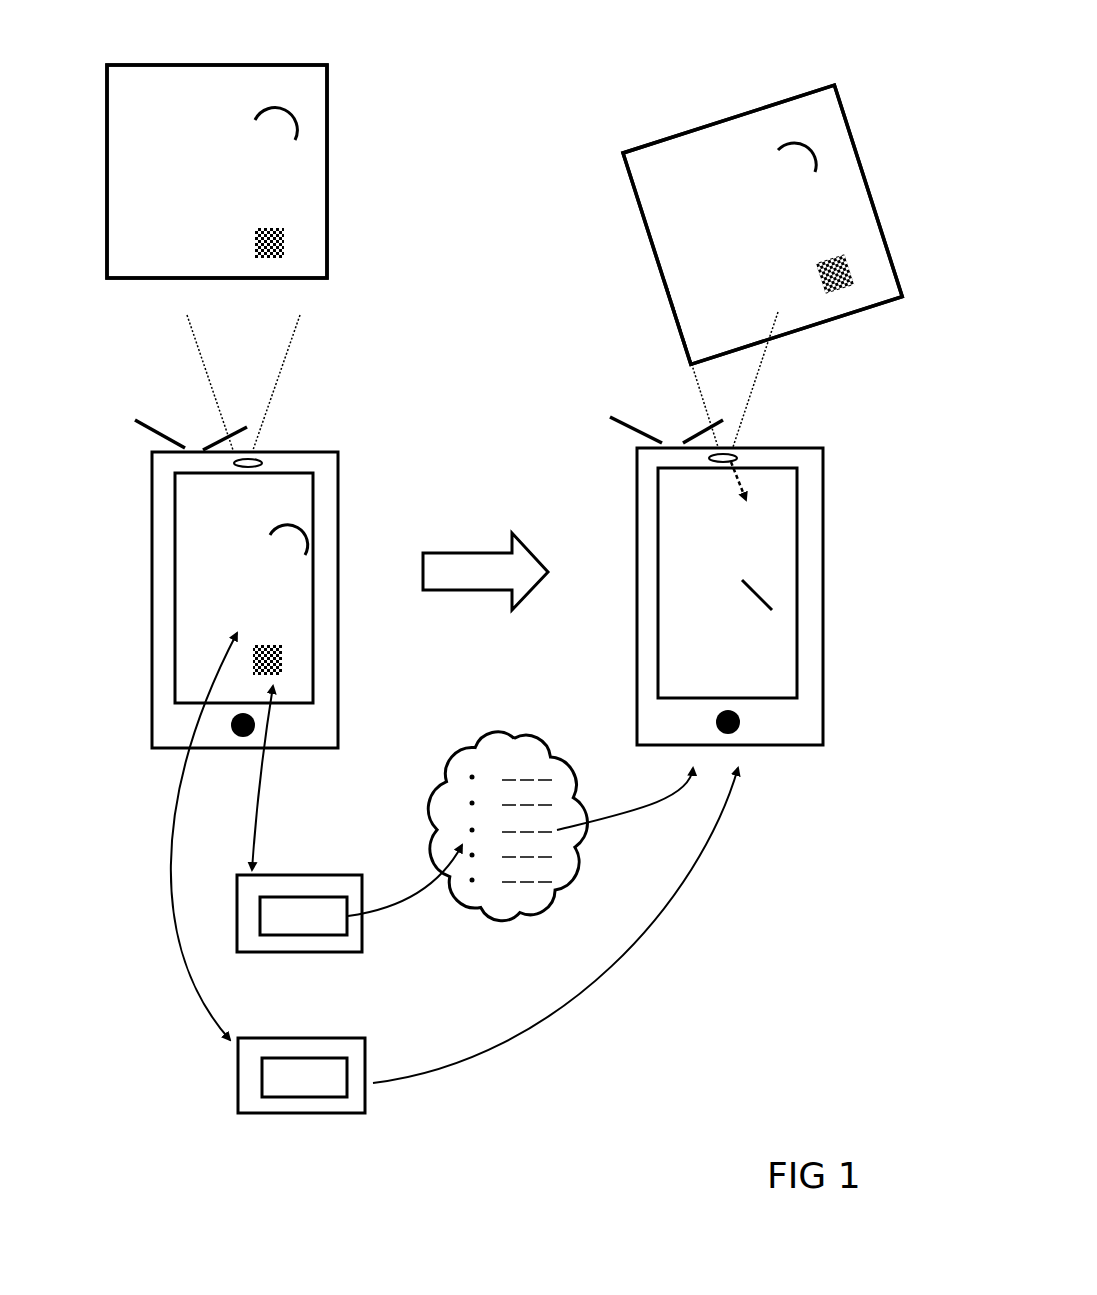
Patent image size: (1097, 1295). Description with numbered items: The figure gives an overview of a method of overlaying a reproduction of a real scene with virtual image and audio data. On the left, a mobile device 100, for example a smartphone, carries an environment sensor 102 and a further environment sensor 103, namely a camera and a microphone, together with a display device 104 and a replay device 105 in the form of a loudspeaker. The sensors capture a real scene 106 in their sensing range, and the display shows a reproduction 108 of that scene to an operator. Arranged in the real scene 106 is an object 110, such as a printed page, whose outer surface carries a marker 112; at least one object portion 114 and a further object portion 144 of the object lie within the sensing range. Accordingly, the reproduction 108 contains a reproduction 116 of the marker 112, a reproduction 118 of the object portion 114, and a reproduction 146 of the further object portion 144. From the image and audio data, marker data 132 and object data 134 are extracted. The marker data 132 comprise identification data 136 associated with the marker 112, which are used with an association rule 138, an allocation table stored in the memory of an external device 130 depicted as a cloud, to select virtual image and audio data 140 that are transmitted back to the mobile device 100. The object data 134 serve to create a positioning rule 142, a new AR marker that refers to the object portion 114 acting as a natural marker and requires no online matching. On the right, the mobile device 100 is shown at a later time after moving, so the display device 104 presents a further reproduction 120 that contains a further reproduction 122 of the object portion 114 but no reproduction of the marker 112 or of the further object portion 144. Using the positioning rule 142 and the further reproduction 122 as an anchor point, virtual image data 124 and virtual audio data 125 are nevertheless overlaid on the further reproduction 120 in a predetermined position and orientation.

The mobile device 100 is at (337, 457).
The environment sensor 102 is at (258, 448).
The further environment sensor 103 is at (190, 448).
The display device 104 is at (313, 580).
The replay device 105 is at (262, 463).
The real scene 106 is at (296, 35).
The reproduction 108 is at (243, 530).
The object 110 is at (325, 143).
The marker 112 is at (285, 233).
The object portion 114 is at (182, 165).
The reproduction of the marker 116 is at (283, 655).
The reproduction of the object portion 118 is at (223, 593).
The further reproduction 120 is at (718, 682).
The further reproduction of the object portion 122 is at (768, 603).
The virtual image data 124 is at (690, 517).
The virtual audio data 125 is at (743, 482).
The external device 130 is at (530, 723).
The marker data 132 is at (262, 873).
The object data 134 is at (263, 1038).
The identification data 136 is at (317, 895).
The association rule 138 is at (503, 767).
The virtual image and audio data 140 is at (657, 803).
The positioning rule 142 is at (320, 1058).
The further object portion 144 is at (275, 103).
The reproduction of the further object portion 146 is at (290, 520).